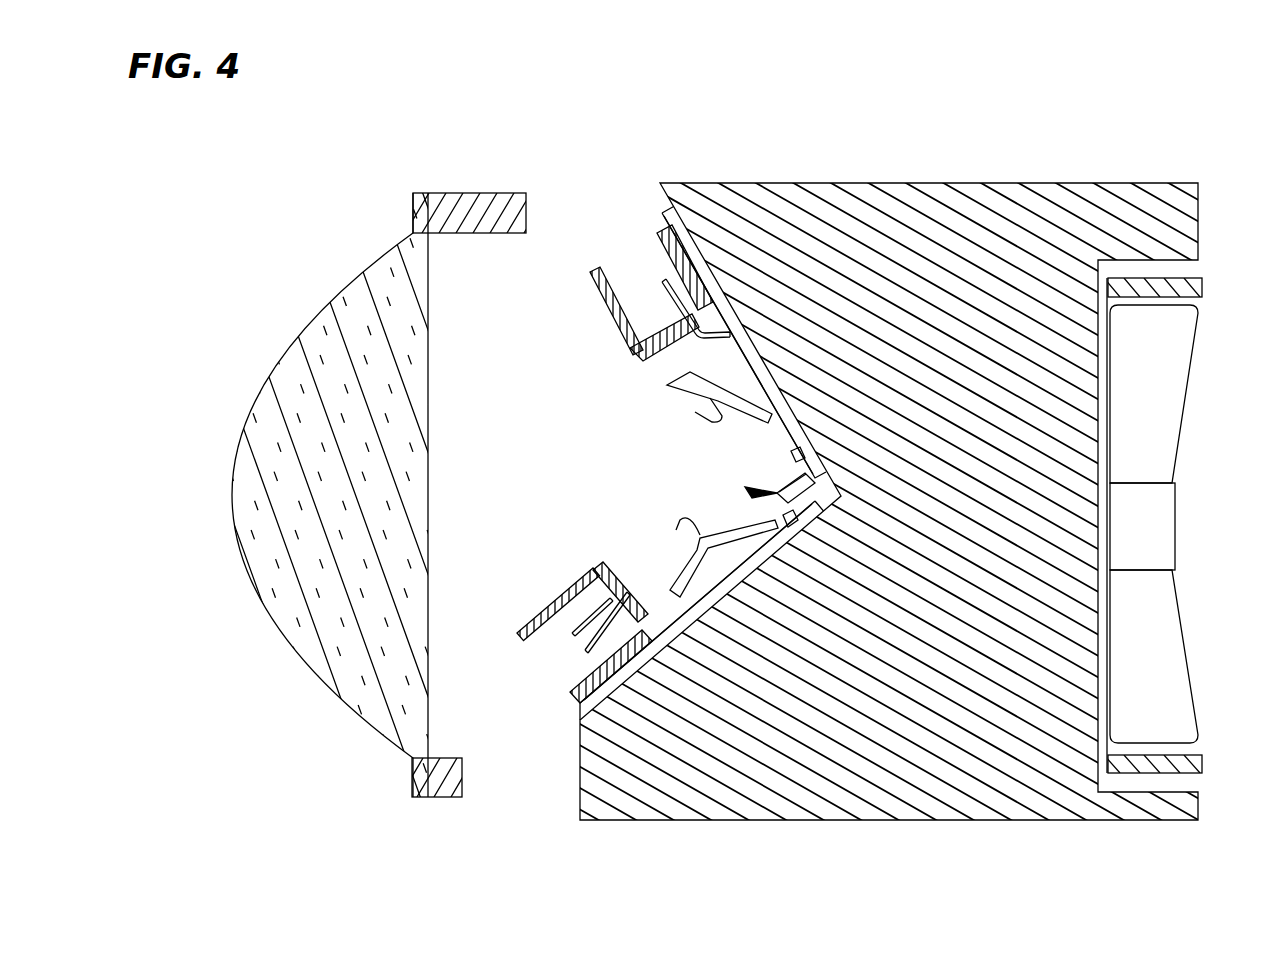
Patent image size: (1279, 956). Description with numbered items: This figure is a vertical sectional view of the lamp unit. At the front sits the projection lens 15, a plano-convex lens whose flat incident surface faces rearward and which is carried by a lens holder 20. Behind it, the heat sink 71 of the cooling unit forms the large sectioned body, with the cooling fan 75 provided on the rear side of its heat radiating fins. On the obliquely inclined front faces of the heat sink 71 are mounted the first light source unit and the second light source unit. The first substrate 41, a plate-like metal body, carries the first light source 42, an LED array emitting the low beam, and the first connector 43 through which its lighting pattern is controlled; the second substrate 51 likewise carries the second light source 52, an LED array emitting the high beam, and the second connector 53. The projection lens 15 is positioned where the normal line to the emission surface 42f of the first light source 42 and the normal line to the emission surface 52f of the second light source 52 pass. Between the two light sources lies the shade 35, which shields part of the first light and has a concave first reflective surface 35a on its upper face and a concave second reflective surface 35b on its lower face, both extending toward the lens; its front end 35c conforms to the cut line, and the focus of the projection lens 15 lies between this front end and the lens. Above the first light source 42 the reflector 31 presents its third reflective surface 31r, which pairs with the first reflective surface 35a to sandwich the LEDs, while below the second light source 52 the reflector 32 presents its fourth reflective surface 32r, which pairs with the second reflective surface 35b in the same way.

The projection lens 15 is at (296, 397).
The lens holder 20 is at (440, 216).
The reflector 31 is at (668, 384).
The third reflective surface 31r is at (708, 411).
The reflector 32 is at (690, 556).
The fourth reflective surface 32r is at (688, 522).
The shade 35 is at (745, 490).
The first reflective surface 35a is at (792, 458).
The second reflective surface 35b is at (785, 518).
The front end 35c is at (795, 486).
The first substrate 41 is at (668, 235).
The first light source 42 is at (796, 460).
The emission surface 42f is at (787, 466).
The first connector 43 is at (598, 274).
The second substrate 51 is at (585, 700).
The second light source 52 is at (777, 512).
The emission surface 52f is at (777, 511).
The second connector 53 is at (548, 633).
The heat sink 71 is at (986, 250).
The cooling fan 75 is at (1168, 432).